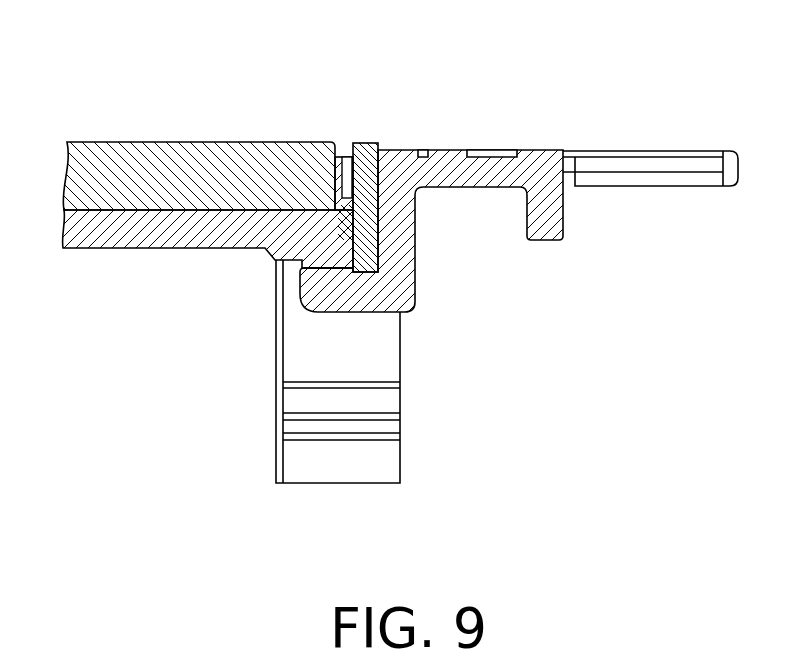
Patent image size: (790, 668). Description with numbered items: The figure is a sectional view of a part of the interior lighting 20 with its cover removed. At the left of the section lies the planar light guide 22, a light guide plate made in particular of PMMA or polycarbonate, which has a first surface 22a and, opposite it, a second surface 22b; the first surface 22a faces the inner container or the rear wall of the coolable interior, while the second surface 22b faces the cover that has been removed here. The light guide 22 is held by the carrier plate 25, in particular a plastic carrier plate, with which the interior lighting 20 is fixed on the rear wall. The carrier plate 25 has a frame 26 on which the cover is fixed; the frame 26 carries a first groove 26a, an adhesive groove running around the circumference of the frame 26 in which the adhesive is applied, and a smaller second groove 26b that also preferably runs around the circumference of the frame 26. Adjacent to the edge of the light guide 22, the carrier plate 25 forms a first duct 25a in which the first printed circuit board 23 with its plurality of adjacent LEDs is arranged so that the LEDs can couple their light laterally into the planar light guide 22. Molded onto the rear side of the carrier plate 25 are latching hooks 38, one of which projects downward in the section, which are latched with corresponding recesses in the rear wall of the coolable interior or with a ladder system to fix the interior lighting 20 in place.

The interior lighting 20 is at (384, 254).
The planar light guide 22 is at (208, 172).
The first surface 22a is at (106, 229).
The second surface 22b is at (144, 131).
The first printed circuit board 23 is at (351, 150).
The carrier plate 25 is at (161, 292).
The first duct 25a is at (320, 268).
The frame 26 is at (465, 213).
The first groove 26a is at (487, 150).
The second groove 26b is at (420, 150).
The latching hook 38 is at (388, 455).